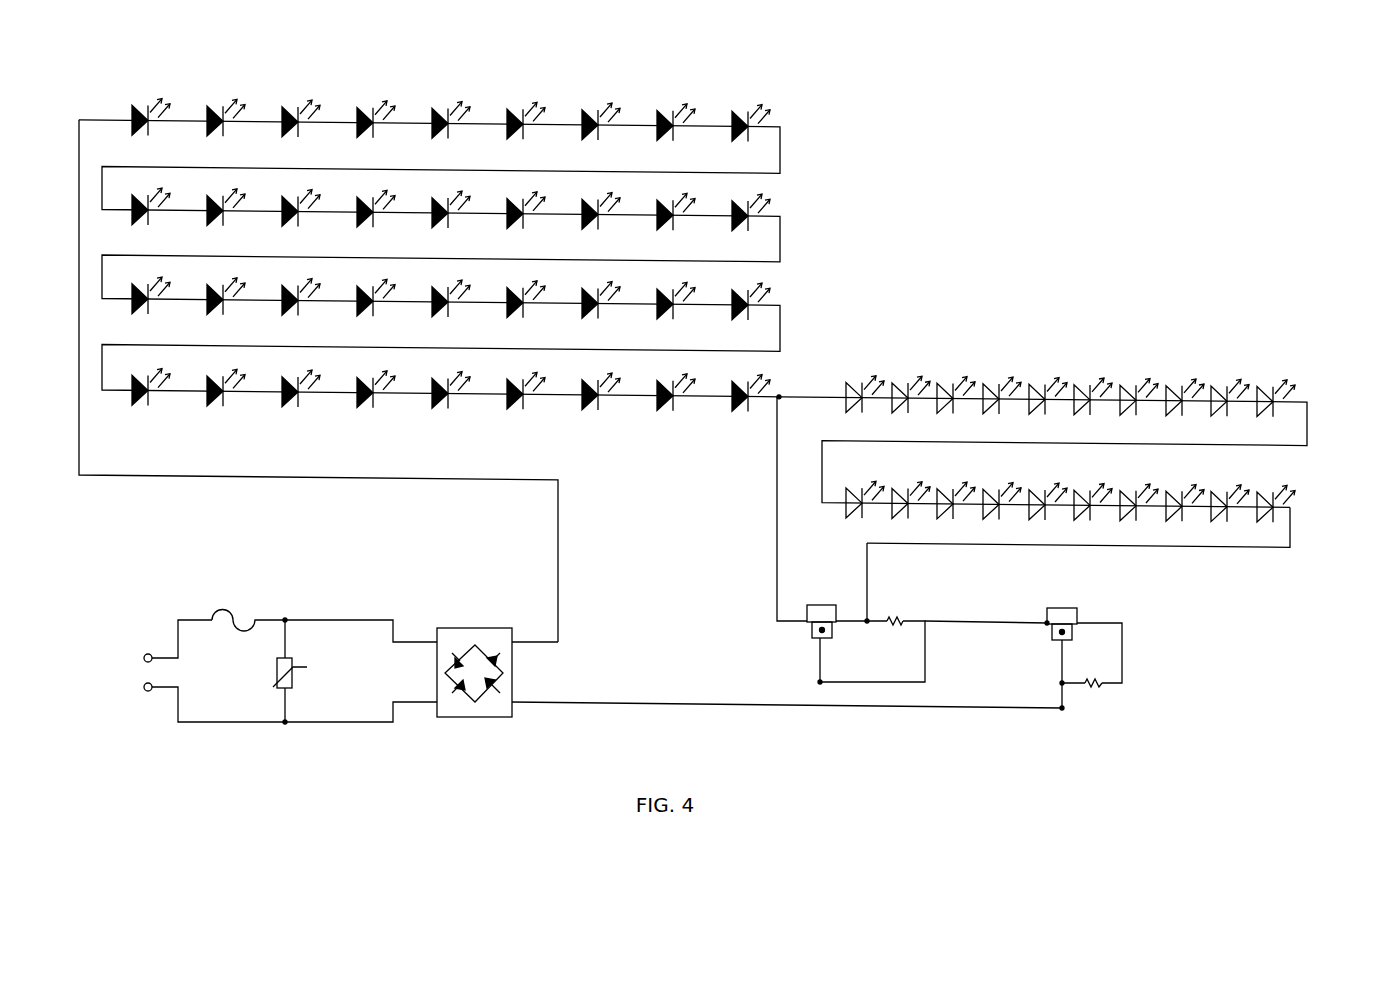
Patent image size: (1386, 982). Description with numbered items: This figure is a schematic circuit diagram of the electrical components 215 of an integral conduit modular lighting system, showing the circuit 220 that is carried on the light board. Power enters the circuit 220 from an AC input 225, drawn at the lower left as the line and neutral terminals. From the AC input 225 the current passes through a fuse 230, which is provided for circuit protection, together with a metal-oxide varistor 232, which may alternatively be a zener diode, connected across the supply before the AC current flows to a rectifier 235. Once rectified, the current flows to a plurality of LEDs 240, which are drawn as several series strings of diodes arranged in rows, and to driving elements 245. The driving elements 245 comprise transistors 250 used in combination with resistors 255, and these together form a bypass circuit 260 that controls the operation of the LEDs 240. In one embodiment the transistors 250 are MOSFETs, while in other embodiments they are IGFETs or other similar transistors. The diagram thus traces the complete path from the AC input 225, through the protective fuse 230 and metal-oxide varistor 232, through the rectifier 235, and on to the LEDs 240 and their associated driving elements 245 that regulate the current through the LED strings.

The electrical components 215 is at (693, 452).
The circuit 220 is at (1100, 267).
The AC input 225 is at (157, 635).
The fuse 230 is at (247, 610).
The metal-oxide varistor 232 is at (293, 673).
The rectifier 235 is at (473, 625).
The LEDs 240 is at (520, 103).
The driving elements 245 is at (773, 650).
The transistors 250 is at (820, 602).
The resistors 255 is at (902, 628).
The bypass circuit 260 is at (1312, 507).